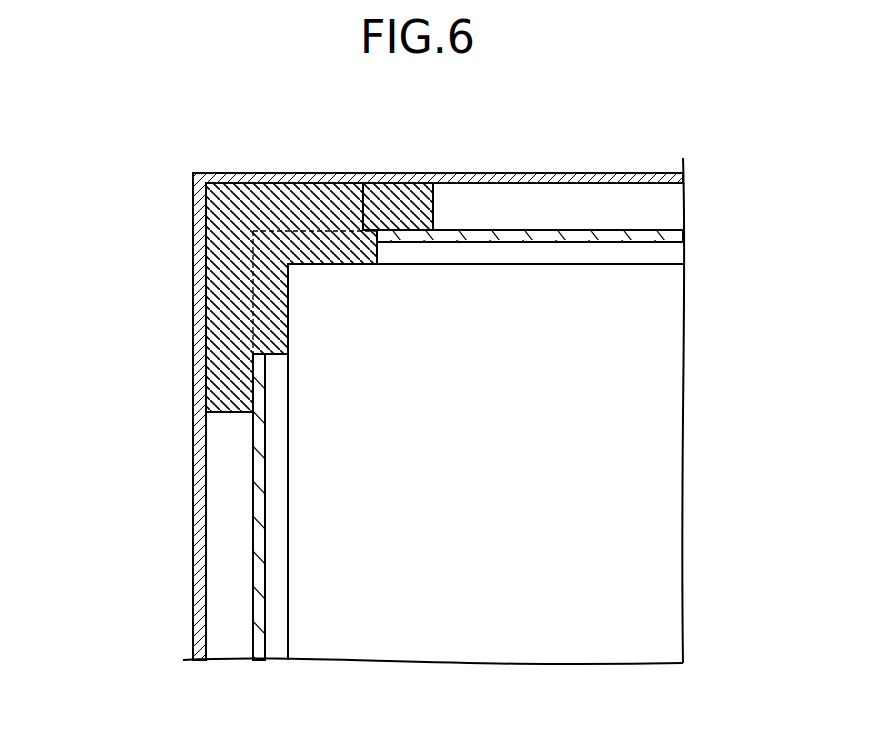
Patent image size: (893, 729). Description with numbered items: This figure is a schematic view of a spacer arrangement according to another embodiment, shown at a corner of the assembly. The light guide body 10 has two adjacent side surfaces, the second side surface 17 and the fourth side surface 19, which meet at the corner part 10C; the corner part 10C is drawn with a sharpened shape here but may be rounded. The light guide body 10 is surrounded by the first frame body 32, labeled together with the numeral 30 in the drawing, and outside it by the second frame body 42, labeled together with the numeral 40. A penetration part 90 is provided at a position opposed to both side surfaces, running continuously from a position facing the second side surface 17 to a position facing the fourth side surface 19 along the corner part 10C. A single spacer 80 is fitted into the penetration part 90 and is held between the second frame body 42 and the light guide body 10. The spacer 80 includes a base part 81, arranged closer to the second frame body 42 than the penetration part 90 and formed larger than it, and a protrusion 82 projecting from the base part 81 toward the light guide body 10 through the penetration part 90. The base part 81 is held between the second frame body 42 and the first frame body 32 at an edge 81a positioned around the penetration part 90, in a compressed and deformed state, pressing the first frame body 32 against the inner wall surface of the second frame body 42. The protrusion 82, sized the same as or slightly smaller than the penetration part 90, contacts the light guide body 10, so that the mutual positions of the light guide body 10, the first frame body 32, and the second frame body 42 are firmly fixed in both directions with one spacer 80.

The light guide body 10 is at (660, 572).
The corner part 10C is at (246, 219).
The second side surface 17 is at (640, 265).
The fourth side surface 19 is at (286, 621).
The first insulating layer 30 is at (382, 386).
The first frame body 32 is at (613, 230).
The second insulating layer 40 is at (382, 386).
The second frame body 42 is at (495, 172).
The spacer 80 is at (227, 297).
The base part 81 is at (225, 265).
The edge 81a is at (404, 208).
The protrusion 82 is at (268, 330).
The penetration part 90 is at (363, 172).